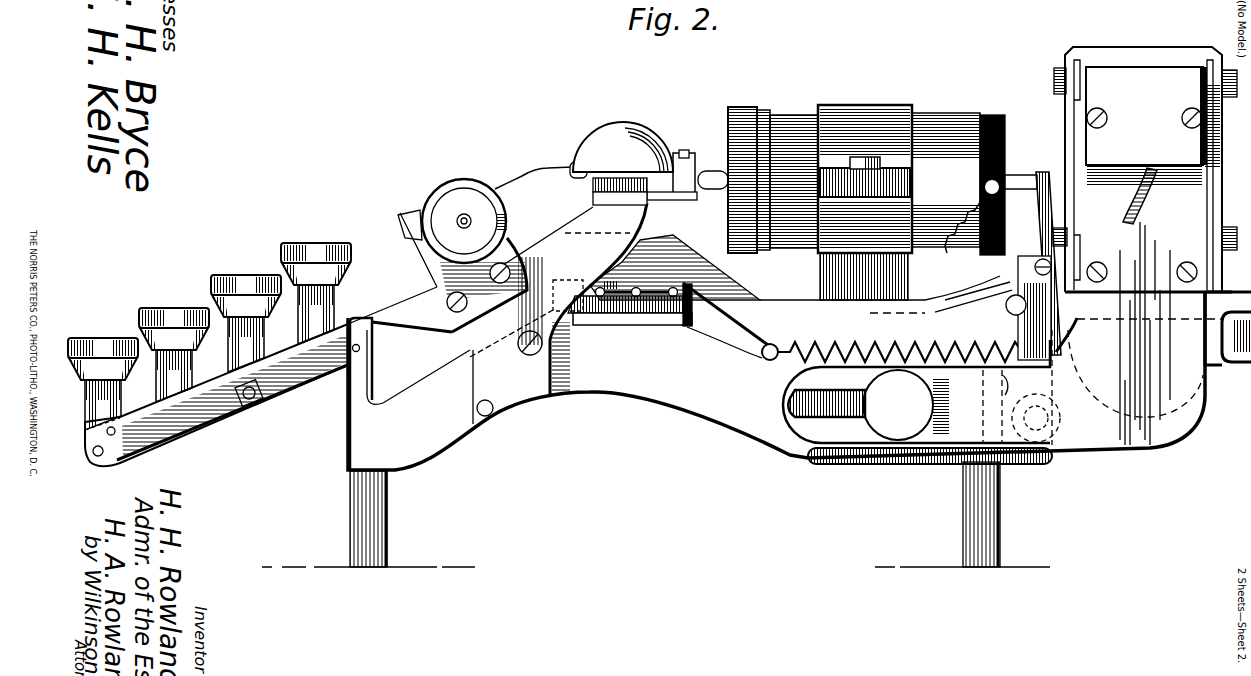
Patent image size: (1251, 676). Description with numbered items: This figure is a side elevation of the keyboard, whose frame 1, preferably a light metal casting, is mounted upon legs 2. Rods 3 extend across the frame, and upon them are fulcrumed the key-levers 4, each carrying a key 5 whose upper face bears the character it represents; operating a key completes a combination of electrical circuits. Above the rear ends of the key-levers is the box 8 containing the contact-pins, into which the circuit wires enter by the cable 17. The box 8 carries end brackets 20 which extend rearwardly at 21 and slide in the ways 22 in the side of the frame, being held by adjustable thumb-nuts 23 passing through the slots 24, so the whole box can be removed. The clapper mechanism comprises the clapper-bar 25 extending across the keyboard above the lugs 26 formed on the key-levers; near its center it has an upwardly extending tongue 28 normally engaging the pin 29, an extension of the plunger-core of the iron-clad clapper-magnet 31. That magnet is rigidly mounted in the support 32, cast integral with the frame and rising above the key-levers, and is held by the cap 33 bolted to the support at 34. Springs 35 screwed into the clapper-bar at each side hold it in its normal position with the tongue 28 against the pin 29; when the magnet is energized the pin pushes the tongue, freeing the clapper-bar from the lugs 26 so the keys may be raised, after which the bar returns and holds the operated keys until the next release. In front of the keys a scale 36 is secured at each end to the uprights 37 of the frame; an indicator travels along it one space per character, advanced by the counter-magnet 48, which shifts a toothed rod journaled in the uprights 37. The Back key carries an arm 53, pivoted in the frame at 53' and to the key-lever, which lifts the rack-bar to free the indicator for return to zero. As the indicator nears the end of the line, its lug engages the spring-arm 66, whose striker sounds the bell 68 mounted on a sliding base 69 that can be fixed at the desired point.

The frame 1 is at (785, 336).
The legs 2 is at (388, 512).
The rods 3 is at (636, 295).
The key-levers 4 is at (212, 412).
The key 5 is at (160, 380).
The box 8 is at (1152, 206).
The cable 17 is at (1148, 196).
The end brackets 20 is at (1105, 443).
The rearward extension 21 is at (948, 460).
The ways 22 is at (786, 396).
The thumb-nuts 23 is at (906, 405).
The slots 24 is at (840, 420).
The clapper-bar 25 is at (1018, 267).
The lugs 26 is at (973, 317).
The tongue 28 is at (1049, 178).
The pin 29 is at (1018, 172).
The clapper-magnet 31 is at (958, 184).
The support 32 is at (820, 272).
The cap 33 is at (865, 112).
The bolt 34 is at (862, 158).
The springs 35 is at (772, 130).
The scale 36 is at (415, 216).
The uprights 37 is at (420, 240).
The counter-magnet 48 is at (507, 218).
The arm 53 is at (383, 394).
The pivot 53' is at (418, 363).
The spring-arm 66 is at (548, 160).
The bell 68 is at (650, 134).
The base 69 is at (593, 188).